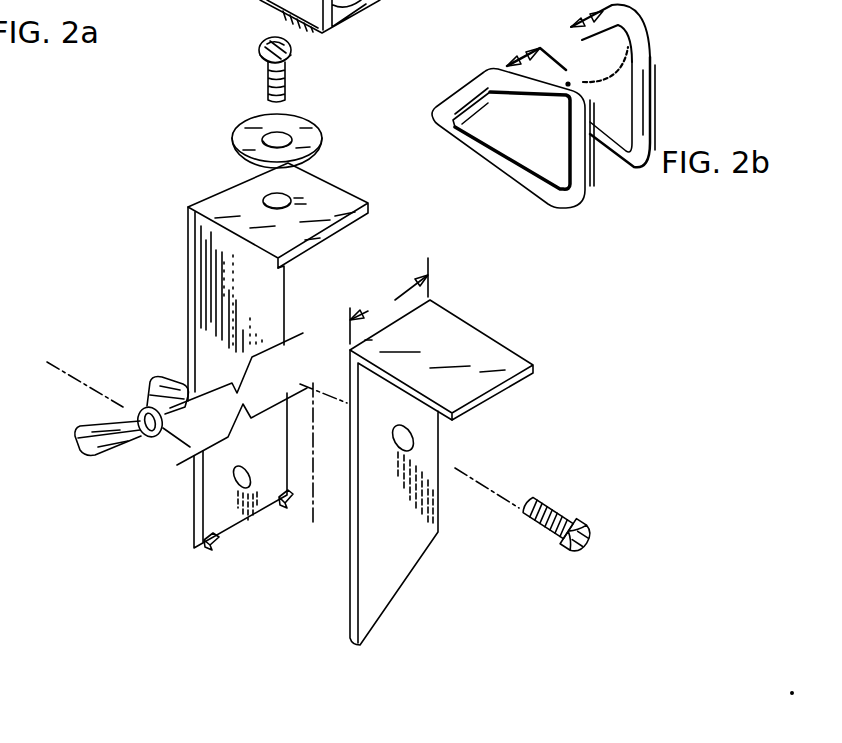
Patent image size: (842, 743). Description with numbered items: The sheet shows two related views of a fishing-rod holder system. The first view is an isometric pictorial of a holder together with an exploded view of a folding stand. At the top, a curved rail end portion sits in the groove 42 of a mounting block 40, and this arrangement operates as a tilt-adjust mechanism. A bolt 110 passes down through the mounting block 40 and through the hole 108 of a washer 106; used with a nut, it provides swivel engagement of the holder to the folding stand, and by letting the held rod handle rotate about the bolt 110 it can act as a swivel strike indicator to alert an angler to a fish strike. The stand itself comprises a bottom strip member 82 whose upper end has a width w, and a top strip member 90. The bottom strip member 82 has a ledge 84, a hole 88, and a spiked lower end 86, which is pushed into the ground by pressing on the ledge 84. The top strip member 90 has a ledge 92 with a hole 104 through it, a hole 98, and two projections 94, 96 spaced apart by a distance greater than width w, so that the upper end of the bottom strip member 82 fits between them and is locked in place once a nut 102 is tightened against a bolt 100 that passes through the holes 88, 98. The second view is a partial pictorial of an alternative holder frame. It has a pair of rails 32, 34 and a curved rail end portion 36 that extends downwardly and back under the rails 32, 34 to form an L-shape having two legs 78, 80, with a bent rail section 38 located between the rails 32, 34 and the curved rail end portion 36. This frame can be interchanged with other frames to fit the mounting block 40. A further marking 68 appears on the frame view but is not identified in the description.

In FIG. 2A, the mounting block 40 is at (268, 16).
In FIG. 2A, the groove 42 is at (341, 13).
In FIG. 2A, the bolt 110 is at (258, 51).
In FIG. 2A, the washer 106 is at (247, 120).
In FIG. 2A, the hole of washer 108 is at (290, 137).
In FIG. 2A, the top strip member 90 is at (247, 343).
In FIG. 2A, the ledge 92 is at (330, 203).
In FIG. 2A, the hole 104 is at (270, 196).
In FIG. 2A, the hole 98 is at (232, 481).
In FIG. 2A, the projection 94 is at (201, 542).
In FIG. 2A, the projection 96 is at (294, 508).
In FIG. 2A, the nut 102 is at (76, 440).
In FIG. 2A, the bottom strip member 82 is at (451, 451).
In FIG. 2A, the ledge 84 is at (468, 352).
In FIG. 2A, the spiked lower end 86 is at (400, 592).
In FIG. 2A, the hole 88 is at (413, 436).
In FIG. 2A, the bolt 100 is at (601, 531).
In FIG. 2B, the leg 78 is at (490, 168).
In FIG. 2B, the leg 80 is at (543, 125).
In FIG. 2B, the rail 32 is at (561, 57).
In FIG. 2B, the rail 34 is at (620, 23).
In FIG. 2B, the curved rail end portion 36 is at (609, 194).
In FIG. 2B, the strap bend 68 is at (603, 80).
In FIG. 2B, the bent rail section 38 is at (593, 100).